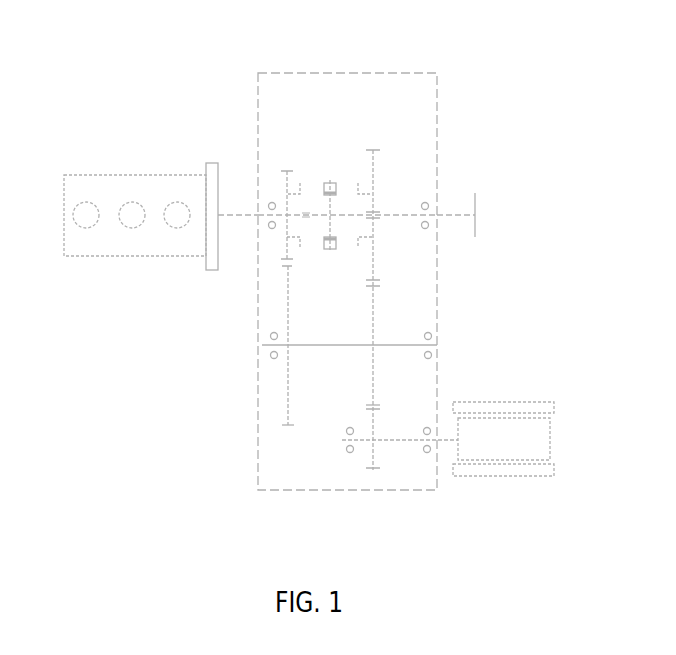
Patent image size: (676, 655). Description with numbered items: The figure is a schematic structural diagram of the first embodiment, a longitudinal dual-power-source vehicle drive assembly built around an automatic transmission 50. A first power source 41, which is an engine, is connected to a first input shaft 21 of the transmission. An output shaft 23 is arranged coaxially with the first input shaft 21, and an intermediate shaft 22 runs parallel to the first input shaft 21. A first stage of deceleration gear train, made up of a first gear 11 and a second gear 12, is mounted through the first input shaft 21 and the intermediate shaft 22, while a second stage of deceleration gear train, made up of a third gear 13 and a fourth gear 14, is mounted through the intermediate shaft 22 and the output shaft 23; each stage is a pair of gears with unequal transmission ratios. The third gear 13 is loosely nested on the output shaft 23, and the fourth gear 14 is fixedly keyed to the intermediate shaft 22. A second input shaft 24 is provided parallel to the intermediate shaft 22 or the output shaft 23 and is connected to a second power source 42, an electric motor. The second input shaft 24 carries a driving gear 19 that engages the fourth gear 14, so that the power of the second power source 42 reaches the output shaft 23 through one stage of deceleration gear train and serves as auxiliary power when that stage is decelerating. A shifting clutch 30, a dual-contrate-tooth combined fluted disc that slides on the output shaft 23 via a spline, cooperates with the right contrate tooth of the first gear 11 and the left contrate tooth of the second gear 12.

The first gear 11 is at (287, 171).
The second gear 12 is at (289, 428).
The third gear 13 is at (373, 150).
The fourth gear 14 is at (373, 385).
The driving gear 19 is at (373, 427).
The first input shaft 21 is at (258, 215).
The intermediate shaft 22 is at (262, 348).
The output shaft 23 is at (452, 215).
The second input shaft 24 is at (412, 440).
The shifting clutch 30 is at (330, 183).
The first power source 41 is at (146, 257).
The second power source 42 is at (520, 478).
The automatic transmission 50 is at (298, 73).